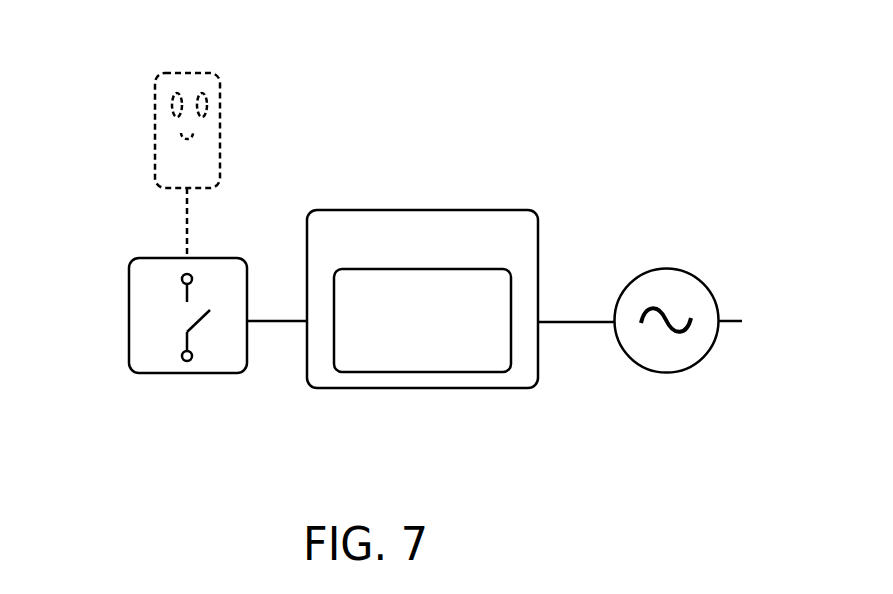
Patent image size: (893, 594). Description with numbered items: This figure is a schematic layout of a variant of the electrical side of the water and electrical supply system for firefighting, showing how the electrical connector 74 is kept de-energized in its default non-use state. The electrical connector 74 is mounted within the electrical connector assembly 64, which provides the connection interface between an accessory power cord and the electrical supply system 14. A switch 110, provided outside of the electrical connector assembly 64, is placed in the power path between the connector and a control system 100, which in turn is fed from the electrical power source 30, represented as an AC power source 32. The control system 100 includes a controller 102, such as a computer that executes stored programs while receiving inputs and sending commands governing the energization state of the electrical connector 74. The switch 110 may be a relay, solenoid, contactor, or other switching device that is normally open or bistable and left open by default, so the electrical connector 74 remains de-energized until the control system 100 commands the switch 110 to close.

The electrical supply system 14 is at (701, 322).
The electrical power source 30 is at (687, 354).
The AC power source 32 is at (692, 353).
The electrical connector assembly 64 is at (128, 156).
The electrical connector 74 is at (156, 152).
The control system 100 is at (446, 265).
The controller 102 is at (382, 275).
The switch 110 is at (129, 355).